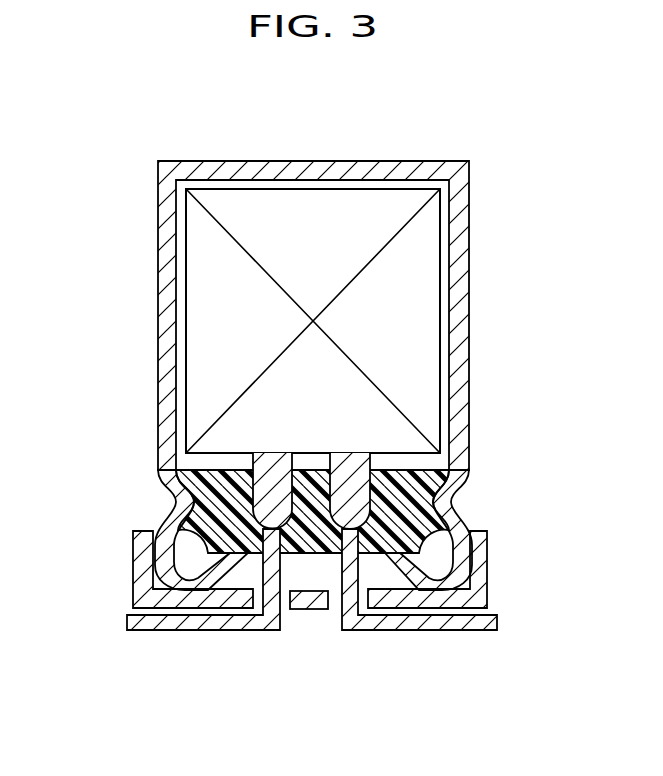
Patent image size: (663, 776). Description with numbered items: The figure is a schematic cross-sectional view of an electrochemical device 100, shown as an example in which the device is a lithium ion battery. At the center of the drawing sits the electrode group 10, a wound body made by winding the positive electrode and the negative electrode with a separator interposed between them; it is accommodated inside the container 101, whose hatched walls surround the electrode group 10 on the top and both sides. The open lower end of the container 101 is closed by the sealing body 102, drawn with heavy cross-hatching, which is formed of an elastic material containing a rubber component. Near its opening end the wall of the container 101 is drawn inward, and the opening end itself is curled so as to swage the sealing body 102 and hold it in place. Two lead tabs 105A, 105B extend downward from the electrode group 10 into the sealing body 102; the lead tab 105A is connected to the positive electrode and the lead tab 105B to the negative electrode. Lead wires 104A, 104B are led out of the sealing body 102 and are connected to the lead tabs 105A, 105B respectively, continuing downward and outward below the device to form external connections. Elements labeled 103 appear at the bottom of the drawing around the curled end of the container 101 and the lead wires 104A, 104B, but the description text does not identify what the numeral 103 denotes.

The electrochemical device 100 is at (338, 149).
The electrode group 10 is at (217, 335).
The container 101 is at (455, 351).
The sealing body 102 is at (405, 508).
The insulating spacers 103 is at (143, 581).
The lead wire 104A is at (197, 632).
The lead wire 104B is at (427, 632).
The lead tab 105A is at (275, 505).
The lead tab 105B is at (350, 478).